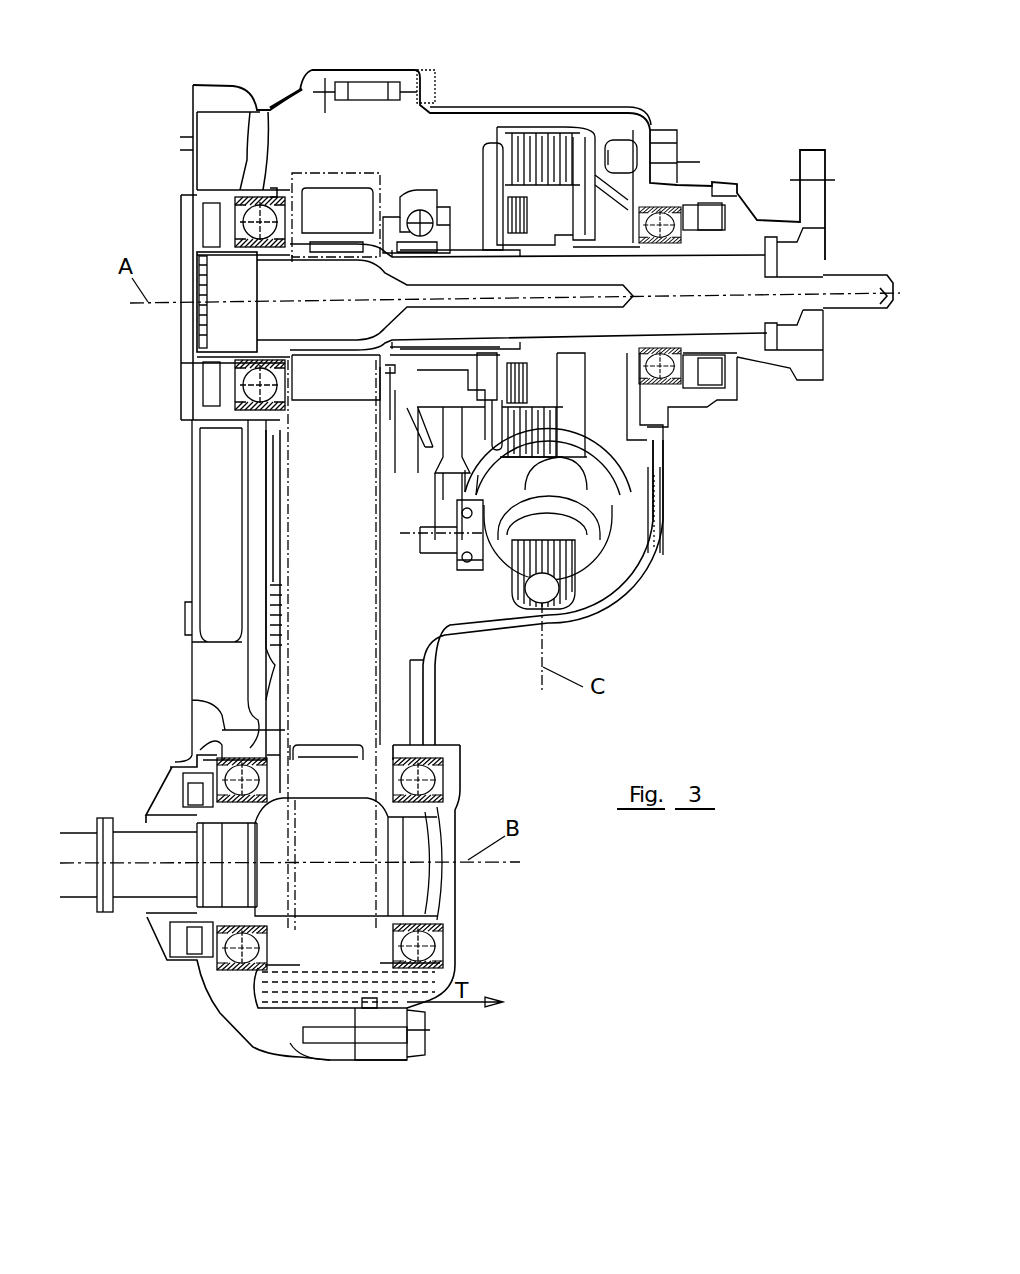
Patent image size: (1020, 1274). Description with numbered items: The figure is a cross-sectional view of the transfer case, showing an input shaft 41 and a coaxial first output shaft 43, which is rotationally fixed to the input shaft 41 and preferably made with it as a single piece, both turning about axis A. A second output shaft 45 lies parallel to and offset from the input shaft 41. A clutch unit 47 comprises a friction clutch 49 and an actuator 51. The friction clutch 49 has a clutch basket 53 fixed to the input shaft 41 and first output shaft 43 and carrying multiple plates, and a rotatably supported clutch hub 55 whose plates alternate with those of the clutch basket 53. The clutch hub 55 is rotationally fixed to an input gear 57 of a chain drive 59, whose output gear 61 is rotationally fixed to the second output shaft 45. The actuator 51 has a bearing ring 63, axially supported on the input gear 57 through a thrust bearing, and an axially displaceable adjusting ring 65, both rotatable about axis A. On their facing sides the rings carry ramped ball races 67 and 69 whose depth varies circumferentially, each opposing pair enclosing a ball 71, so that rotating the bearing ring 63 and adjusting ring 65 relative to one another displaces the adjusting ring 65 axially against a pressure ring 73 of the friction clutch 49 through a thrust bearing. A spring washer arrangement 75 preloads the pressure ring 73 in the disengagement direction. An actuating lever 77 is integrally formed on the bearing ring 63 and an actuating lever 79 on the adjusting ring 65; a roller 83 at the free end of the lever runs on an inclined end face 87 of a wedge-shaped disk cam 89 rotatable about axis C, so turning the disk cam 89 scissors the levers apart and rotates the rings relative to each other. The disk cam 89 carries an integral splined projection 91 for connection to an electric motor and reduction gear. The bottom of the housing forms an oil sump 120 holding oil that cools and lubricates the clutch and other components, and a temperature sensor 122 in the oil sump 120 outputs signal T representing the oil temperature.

The input shaft 41 is at (247, 352).
The first output shaft 43 is at (858, 275).
The second output shaft 45 is at (125, 905).
The clutch unit 47 is at (483, 135).
The friction clutch 49 is at (537, 105).
The actuator 51 is at (517, 652).
The clutch basket 53 is at (568, 132).
The clutch hub 55 is at (567, 193).
The input gear 57 is at (325, 207).
The chain drive 59 is at (282, 530).
The output gear 61 is at (313, 958).
The bearing ring 63 is at (400, 205).
The adjusting ring 65 is at (460, 197).
The ball race 67 is at (417, 197).
The ball race 69 is at (447, 207).
The ball 71 is at (420, 210).
The pressure ring 73 is at (490, 150).
The spring washer arrangement 75 is at (515, 252).
The actuating lever 77 is at (418, 430).
The actuating lever 79 is at (422, 473).
The roller 83 is at (458, 570).
The end face 87 is at (610, 552).
The disk cam 89 is at (617, 470).
The splined projection 91 is at (562, 590).
The oil sump 120 is at (297, 1003).
The temperature sensor 122 is at (368, 1008).